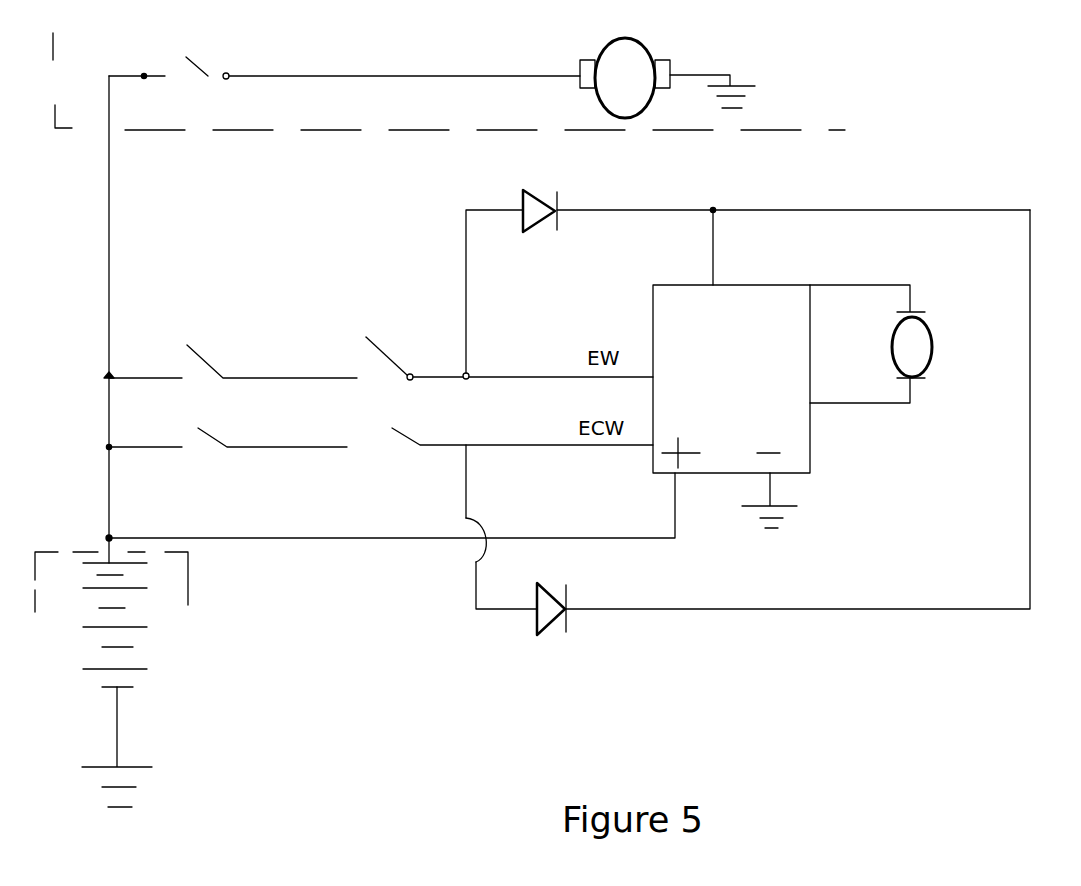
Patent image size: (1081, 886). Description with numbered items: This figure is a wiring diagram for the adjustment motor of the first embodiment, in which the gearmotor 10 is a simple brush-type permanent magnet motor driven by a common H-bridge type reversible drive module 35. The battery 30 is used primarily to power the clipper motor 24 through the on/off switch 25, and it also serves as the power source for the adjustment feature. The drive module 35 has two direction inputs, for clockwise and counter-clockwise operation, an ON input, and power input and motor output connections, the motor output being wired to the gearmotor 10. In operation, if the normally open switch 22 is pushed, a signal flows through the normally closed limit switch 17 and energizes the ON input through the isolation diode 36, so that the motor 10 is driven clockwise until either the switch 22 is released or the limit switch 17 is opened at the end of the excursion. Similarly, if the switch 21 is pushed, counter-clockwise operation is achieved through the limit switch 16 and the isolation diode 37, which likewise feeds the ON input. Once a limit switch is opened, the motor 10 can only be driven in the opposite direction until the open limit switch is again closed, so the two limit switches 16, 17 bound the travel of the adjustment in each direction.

The gearmotor 10 is at (925, 312).
The limit switch 16 is at (398, 440).
The normally closed limit switch 17 is at (438, 340).
The switch 21 is at (205, 440).
The normally open switch 22 is at (213, 361).
The clipper motor 24 is at (655, 49).
The on/off switch 25 is at (208, 63).
The battery 30 is at (165, 640).
The H-bridge drive module 35 is at (832, 458).
The isolation diode 36 is at (568, 202).
The isolation diode 37 is at (575, 620).